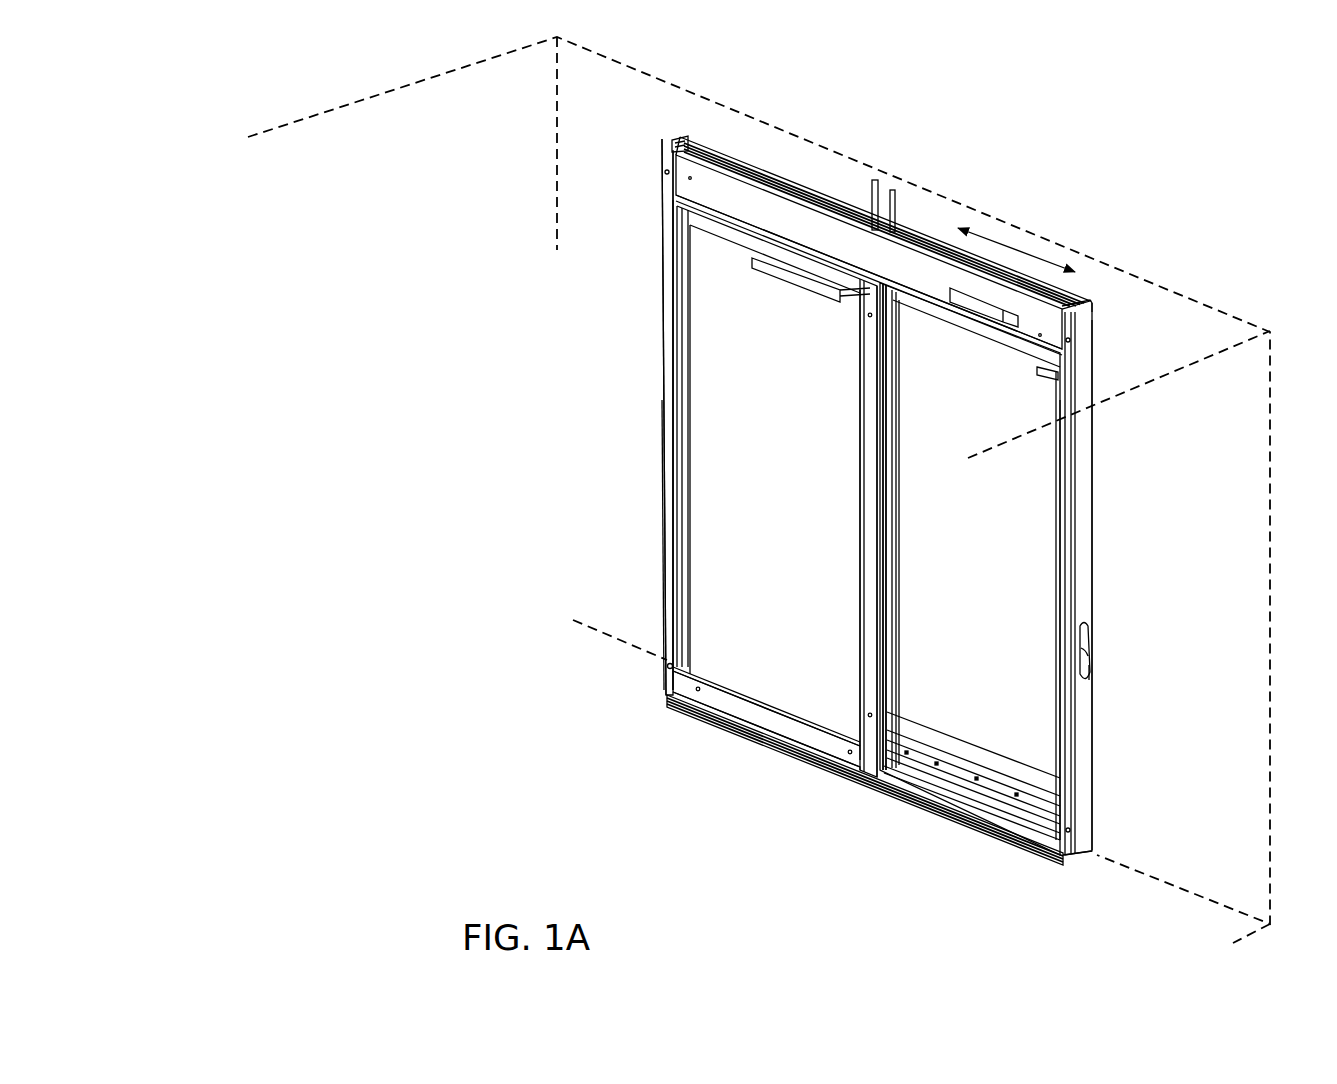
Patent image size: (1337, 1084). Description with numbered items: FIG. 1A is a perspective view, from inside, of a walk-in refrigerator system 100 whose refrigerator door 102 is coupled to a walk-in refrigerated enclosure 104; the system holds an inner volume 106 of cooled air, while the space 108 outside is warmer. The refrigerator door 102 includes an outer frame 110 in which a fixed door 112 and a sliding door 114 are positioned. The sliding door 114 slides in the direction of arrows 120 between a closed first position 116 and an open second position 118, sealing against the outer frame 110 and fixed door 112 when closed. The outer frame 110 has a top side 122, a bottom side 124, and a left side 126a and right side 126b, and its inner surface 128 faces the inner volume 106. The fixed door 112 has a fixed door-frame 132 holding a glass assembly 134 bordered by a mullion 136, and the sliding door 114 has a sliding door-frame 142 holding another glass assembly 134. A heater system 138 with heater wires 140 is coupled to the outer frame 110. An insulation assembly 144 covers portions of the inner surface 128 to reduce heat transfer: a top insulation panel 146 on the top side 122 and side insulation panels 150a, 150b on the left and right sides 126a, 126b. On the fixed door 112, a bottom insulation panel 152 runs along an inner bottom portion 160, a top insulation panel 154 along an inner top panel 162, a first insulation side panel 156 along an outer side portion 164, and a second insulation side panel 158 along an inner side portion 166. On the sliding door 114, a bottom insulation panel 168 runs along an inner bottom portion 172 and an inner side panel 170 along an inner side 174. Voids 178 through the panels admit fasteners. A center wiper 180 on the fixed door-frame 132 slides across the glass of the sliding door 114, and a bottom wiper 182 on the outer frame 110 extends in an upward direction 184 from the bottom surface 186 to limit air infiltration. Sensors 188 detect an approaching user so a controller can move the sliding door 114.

The walk-in refrigerator system 100 is at (1230, 72).
The refrigerator door 102 is at (1106, 295).
The walk-in refrigerated enclosure 104 is at (1237, 313).
The inner volume 106 is at (362, 433).
The space outside the walk-in refrigerator 108 is at (1317, 220).
The outer frame 110 is at (681, 120).
The fixed door 112 is at (730, 490).
The sliding door 114 is at (1023, 556).
The first position 116 is at (1050, 387).
The second position 118 is at (902, 312).
The arrows 120 is at (1020, 216).
The top side 122 is at (848, 232).
The bottom side 124 is at (1052, 854).
The left side 126a is at (1092, 345).
The right side 126b is at (688, 138).
The inner surface 128 is at (780, 208).
The fixed door-frame 132 is at (680, 379).
The glass assembly 134 is at (725, 425).
The mullion 136 is at (856, 572).
The heater system 138 is at (1096, 682).
The heater wires 140 is at (1084, 660).
The sliding door-frame 142 is at (1048, 350).
The insulation assembly 144 is at (660, 269).
The top insulation panel 146 is at (880, 205).
The side insulation panel 150a is at (1078, 450).
The side insulation panel 150b is at (665, 240).
The bottom insulation panel 152 is at (712, 705).
The top insulation panel 154 is at (692, 192).
The first insulation side panel 156 is at (666, 322).
The second insulation side panel 158 is at (860, 686).
The inner bottom portion 160 is at (760, 715).
The inner top panel 162 is at (800, 249).
The outer side portion 164 is at (661, 531).
The inner side portion 166 is at (852, 465).
The bottom insulation panel 168 is at (990, 753).
The inner side panel 170 is at (1055, 527).
The inner bottom portion 172 is at (920, 769).
The inner side 174 is at (1047, 602).
The voids 178 is at (668, 667).
The center wiper 180 is at (904, 646).
The bottom wiper 182 is at (956, 789).
The upward direction 184 is at (1033, 888).
The bottom surface 186 is at (780, 906).
The sensors 188 is at (946, 288).